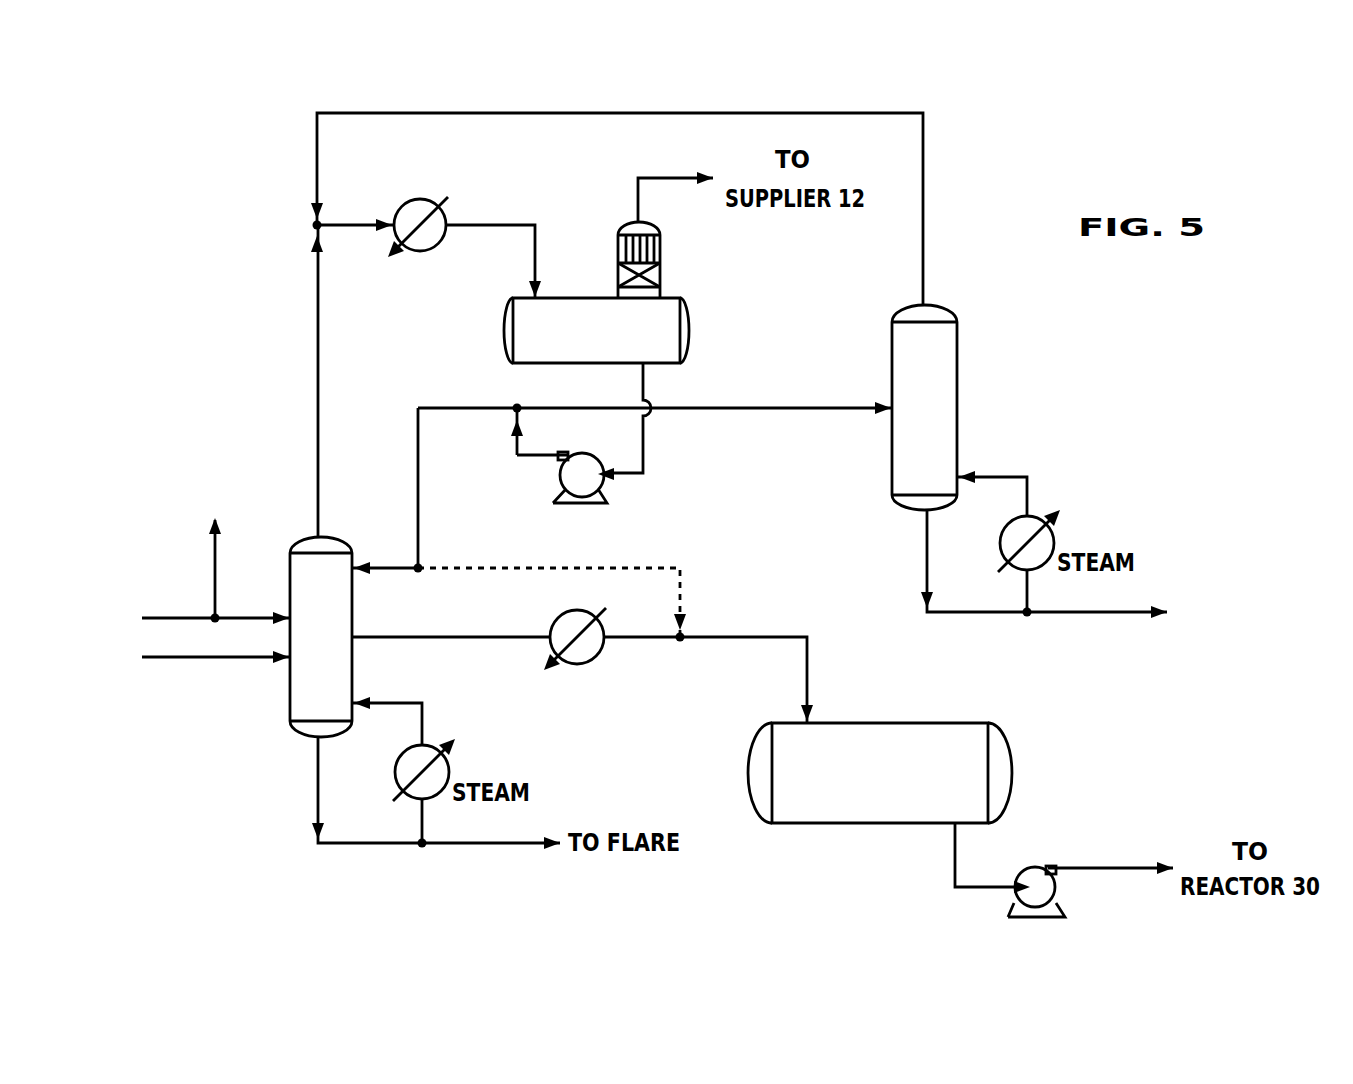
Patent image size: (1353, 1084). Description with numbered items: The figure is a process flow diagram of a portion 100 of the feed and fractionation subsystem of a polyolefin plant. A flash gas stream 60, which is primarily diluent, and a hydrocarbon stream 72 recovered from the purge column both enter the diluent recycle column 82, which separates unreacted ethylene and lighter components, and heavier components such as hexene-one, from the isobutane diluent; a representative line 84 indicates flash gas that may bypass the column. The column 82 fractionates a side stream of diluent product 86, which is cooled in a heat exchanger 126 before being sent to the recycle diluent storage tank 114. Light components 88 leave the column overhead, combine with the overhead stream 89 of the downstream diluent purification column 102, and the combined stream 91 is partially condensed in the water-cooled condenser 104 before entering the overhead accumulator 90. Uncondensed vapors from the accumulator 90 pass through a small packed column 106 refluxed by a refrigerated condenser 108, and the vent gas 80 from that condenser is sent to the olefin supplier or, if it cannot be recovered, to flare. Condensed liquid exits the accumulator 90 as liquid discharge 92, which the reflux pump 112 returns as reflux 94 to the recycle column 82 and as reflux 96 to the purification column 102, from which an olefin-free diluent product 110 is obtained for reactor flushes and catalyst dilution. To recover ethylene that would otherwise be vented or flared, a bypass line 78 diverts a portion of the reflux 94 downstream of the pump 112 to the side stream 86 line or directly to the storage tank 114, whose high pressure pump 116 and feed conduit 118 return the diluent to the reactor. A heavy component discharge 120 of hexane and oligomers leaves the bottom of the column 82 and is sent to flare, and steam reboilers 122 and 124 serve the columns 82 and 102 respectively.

The portion of the feed and fractionation subsystem 100 is at (186, 272).
The flash gas stream 60 is at (163, 618).
The hydrocarbon stream 72 is at (165, 660).
The bypass line 78 is at (628, 568).
The vent gas 80 is at (655, 178).
The diluent recycle column 82 is at (300, 737).
The bypass line for flash gas 84 is at (215, 585).
The side stream of diluent product 86 is at (440, 637).
The light components overhead 88 is at (317, 388).
The overhead stream of diluent purification column 89 is at (533, 113).
The overhead accumulator 90 is at (503, 335).
The combined stream 91 is at (467, 225).
The liquid discharge 92 is at (648, 438).
The reflux 94 is at (418, 475).
The reflux to diluent purification column 96 is at (748, 408).
The diluent purification column 102 is at (961, 393).
The water-cooled condenser 104 is at (409, 204).
The packed column 106 is at (661, 276).
The refrigerated condenser 108 is at (620, 250).
The olefin-free diluent product 110 is at (1072, 615).
The reflux pump 112 is at (563, 480).
The recycle diluent storage tank 114 is at (890, 723).
The high pressure pump 116 is at (1058, 890).
The feed conduit 118 is at (1082, 868).
The heavy component discharge 120 is at (431, 848).
The steam reboiler 122 is at (431, 748).
The steam reboiler 124 is at (1039, 520).
The heat exchanger 126 is at (606, 650).